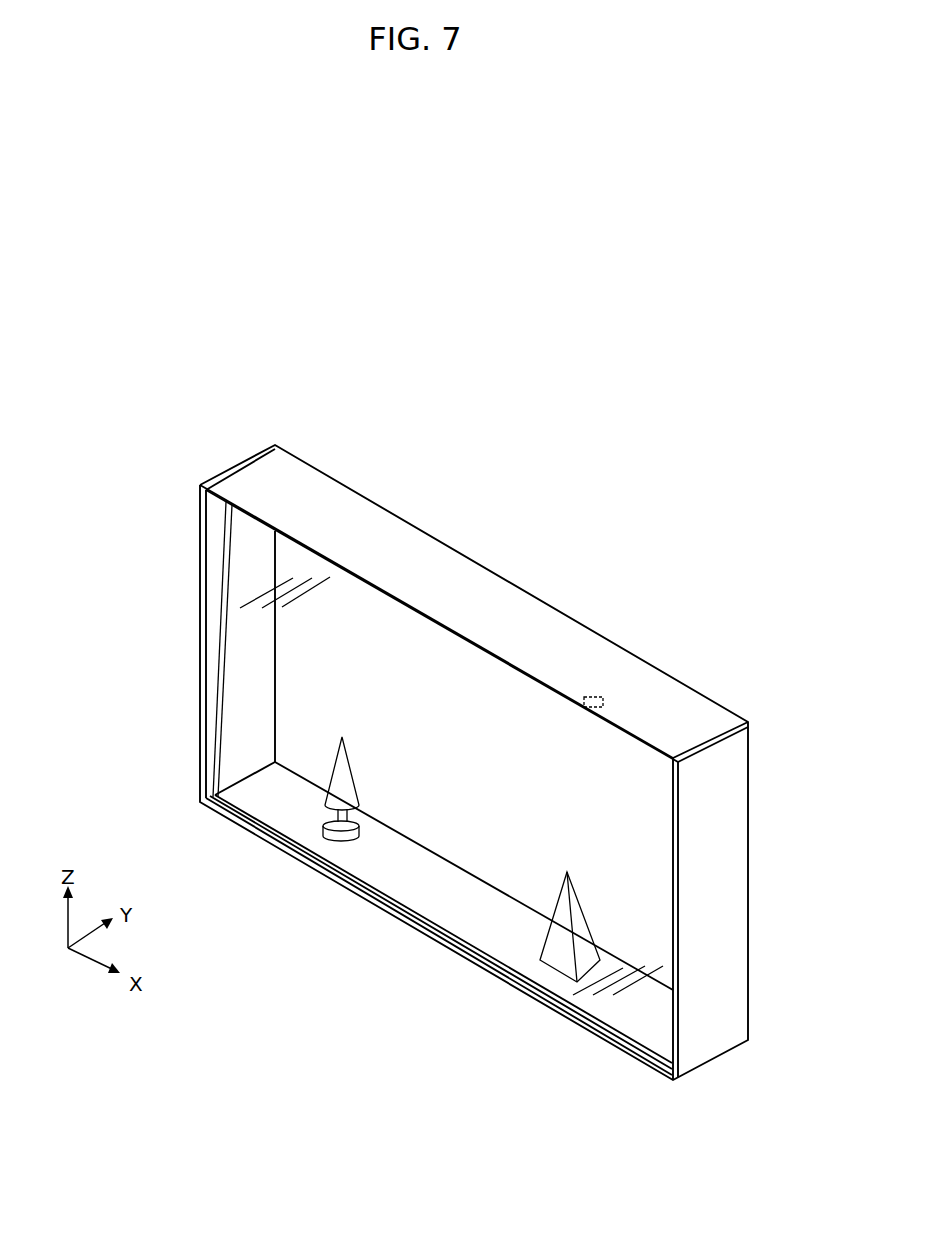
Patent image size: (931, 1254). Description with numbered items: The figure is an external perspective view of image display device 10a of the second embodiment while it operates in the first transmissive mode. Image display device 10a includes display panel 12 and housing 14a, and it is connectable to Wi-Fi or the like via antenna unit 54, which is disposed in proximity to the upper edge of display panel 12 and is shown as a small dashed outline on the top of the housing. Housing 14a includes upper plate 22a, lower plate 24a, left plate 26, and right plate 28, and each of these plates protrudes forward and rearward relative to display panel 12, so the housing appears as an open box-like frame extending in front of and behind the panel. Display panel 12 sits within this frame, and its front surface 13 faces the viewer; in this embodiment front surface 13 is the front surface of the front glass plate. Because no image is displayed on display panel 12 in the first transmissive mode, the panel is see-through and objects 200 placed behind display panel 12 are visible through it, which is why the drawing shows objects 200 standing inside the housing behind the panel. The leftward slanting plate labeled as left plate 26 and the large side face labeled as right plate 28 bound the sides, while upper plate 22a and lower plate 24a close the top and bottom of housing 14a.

The image display device 10a is at (116, 431).
The housing 14a is at (698, 659).
The upper plate 22a is at (402, 549).
The lower plate 24a is at (505, 978).
The left plate 26 is at (212, 632).
The right plate 28 is at (722, 905).
The display panel 12 is at (263, 802).
The front surface 13 is at (295, 823).
The antenna unit 54 is at (598, 695).
The objects 200 is at (335, 758).